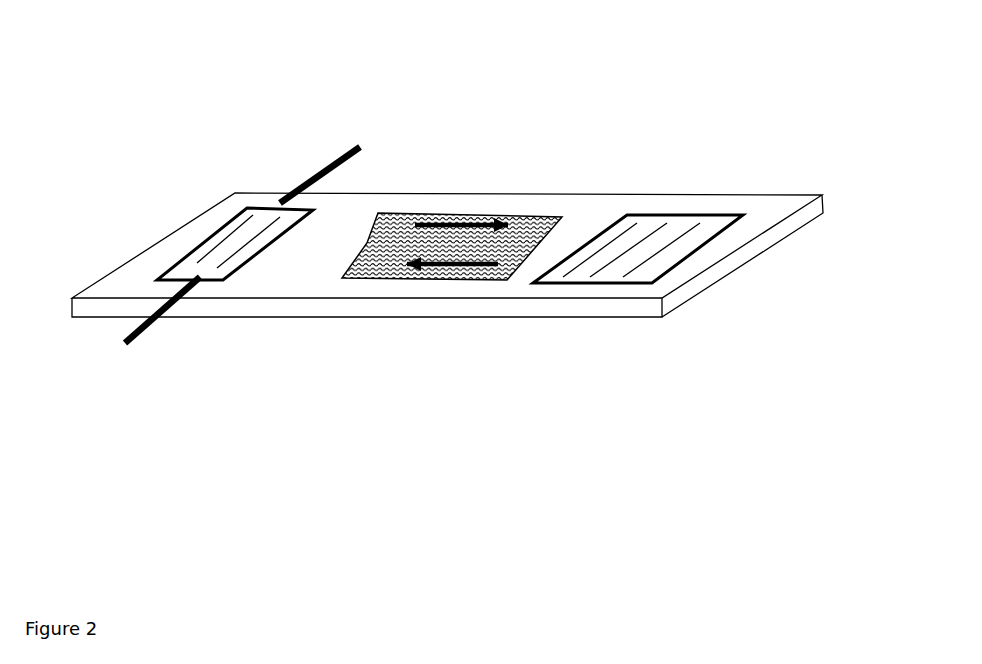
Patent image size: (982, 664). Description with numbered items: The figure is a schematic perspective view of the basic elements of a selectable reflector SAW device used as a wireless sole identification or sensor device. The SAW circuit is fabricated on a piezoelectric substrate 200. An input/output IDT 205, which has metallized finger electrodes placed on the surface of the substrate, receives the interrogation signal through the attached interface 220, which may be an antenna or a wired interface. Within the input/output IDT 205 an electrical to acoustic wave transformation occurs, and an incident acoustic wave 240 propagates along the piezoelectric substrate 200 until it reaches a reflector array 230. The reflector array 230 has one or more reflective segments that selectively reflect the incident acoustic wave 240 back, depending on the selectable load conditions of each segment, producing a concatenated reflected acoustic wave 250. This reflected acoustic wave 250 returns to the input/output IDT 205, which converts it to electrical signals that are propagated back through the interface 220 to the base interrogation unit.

The piezoelectric substrate 200 is at (572, 322).
The input/output IDT 205 is at (218, 222).
The interface 220 is at (333, 138).
The reflector array 230 is at (708, 207).
The incident acoustic wave 240 is at (517, 200).
The reflected acoustic wave 250 is at (442, 283).